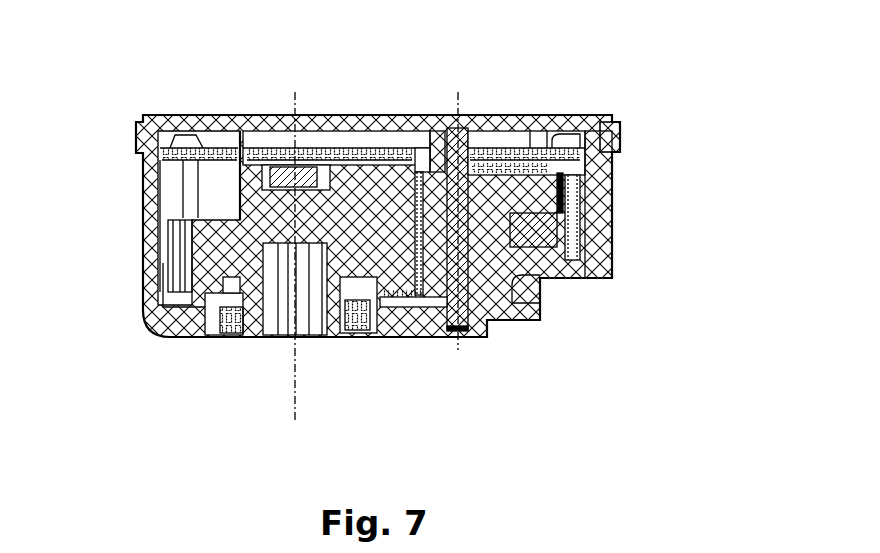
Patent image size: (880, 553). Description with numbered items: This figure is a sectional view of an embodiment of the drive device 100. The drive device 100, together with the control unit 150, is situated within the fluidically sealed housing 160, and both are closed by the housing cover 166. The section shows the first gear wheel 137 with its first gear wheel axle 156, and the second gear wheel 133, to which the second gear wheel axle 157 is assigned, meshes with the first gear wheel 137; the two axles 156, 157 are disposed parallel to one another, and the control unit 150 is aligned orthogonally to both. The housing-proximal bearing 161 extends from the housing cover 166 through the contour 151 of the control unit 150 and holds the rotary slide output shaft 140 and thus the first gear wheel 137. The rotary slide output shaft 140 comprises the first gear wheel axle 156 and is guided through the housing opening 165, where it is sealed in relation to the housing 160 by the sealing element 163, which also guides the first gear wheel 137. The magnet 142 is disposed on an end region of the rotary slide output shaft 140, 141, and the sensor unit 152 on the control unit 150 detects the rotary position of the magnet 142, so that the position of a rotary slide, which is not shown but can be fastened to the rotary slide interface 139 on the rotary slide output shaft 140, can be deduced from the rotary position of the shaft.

The drive device 100 is at (623, 78).
The second gear wheel 133 is at (527, 310).
The first gear wheel 137 is at (192, 252).
The rotary slide interface 139 is at (305, 275).
The rotary slide output shaft 140 is at (188, 315).
The rotary slide output shaft 141 is at (330, 187).
The magnet 142 is at (240, 180).
The control unit 150 is at (343, 148).
The contour 151 is at (237, 133).
The sensor unit 152 is at (278, 150).
The first gear wheel axle 156 is at (295, 420).
The second gear wheel axle 157 is at (458, 358).
The housing 160 is at (593, 207).
The housing-proximal bearing 161 is at (217, 153).
The sealing element 163 is at (230, 310).
The housing opening 165 is at (290, 290).
The housing cover 166 is at (516, 135).